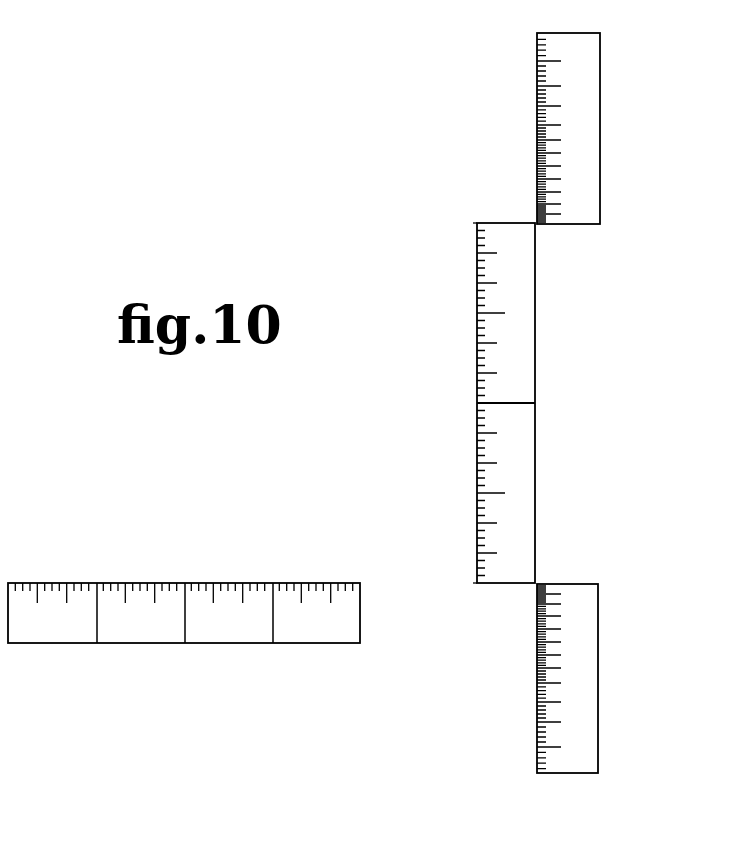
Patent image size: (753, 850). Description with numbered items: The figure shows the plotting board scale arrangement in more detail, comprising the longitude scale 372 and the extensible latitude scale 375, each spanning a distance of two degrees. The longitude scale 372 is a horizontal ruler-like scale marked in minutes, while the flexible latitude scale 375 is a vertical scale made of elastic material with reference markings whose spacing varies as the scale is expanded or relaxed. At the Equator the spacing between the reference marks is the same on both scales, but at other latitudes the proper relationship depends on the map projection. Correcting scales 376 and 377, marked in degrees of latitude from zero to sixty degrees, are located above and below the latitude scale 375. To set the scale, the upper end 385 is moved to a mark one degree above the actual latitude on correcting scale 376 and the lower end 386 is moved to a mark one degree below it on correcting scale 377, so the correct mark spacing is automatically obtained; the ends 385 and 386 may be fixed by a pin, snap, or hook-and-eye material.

The longitude scale 372 is at (181, 644).
The extensible latitude scale 375 is at (535, 418).
The correcting scale 376 is at (600, 133).
The correcting scale 377 is at (598, 692).
The upper end 385 is at (477, 223).
The lower end 386 is at (477, 583).